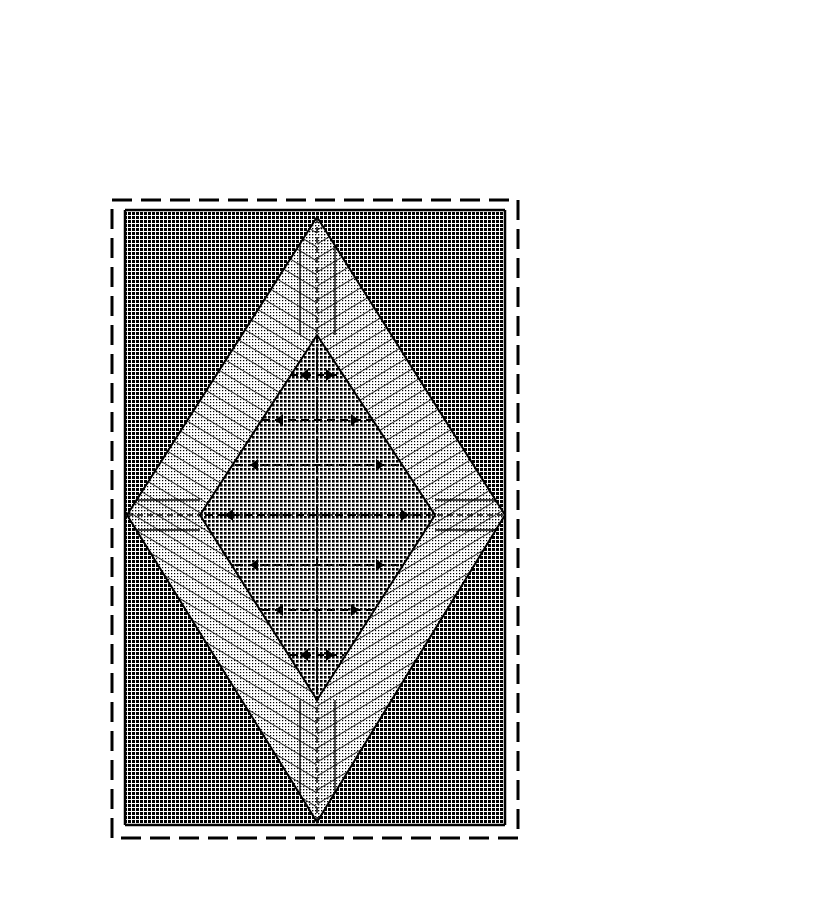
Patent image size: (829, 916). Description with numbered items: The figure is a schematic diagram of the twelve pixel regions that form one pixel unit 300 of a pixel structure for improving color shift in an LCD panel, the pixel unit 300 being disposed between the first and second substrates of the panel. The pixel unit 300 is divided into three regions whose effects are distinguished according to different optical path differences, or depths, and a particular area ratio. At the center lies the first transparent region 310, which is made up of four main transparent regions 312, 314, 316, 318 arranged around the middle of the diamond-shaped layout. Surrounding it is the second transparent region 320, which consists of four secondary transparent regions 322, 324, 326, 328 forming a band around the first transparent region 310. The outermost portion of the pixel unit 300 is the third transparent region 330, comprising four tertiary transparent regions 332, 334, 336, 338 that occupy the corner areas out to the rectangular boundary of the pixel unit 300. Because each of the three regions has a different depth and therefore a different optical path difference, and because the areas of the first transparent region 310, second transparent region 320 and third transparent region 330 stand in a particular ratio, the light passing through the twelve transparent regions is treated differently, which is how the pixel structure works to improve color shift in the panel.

The pixel unit 300 is at (402, 135).
The first transparent region 310 is at (125, 520).
The main transparent region 312 is at (512, 433).
The main transparent region 314 is at (123, 443).
The main transparent region 316 is at (123, 605).
The main transparent region 318 is at (508, 605).
The second transparent region 320 is at (120, 470).
The secondary transparent region 322 is at (512, 358).
The secondary transparent region 324 is at (115, 360).
The secondary transparent region 326 is at (125, 680).
The secondary transparent region 328 is at (508, 678).
The third transparent region 330 is at (112, 230).
The tertiary transparent region 332 is at (508, 288).
The tertiary transparent region 334 is at (125, 288).
The tertiary transparent region 336 is at (125, 757).
The tertiary transparent region 338 is at (508, 747).